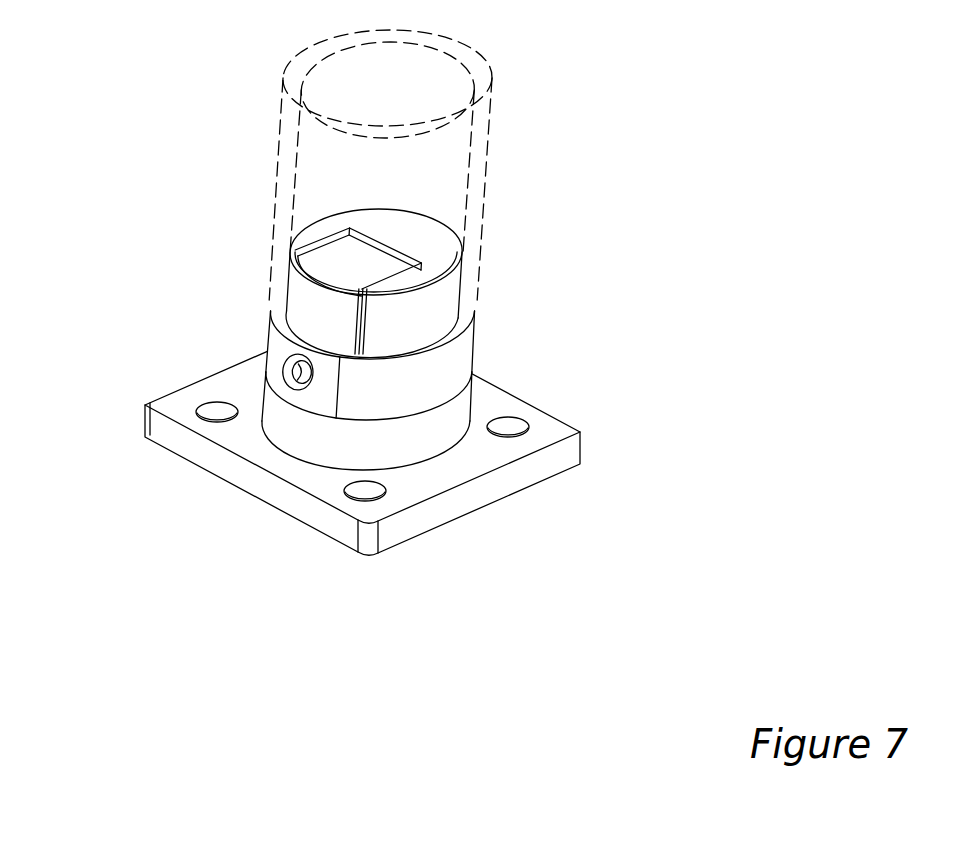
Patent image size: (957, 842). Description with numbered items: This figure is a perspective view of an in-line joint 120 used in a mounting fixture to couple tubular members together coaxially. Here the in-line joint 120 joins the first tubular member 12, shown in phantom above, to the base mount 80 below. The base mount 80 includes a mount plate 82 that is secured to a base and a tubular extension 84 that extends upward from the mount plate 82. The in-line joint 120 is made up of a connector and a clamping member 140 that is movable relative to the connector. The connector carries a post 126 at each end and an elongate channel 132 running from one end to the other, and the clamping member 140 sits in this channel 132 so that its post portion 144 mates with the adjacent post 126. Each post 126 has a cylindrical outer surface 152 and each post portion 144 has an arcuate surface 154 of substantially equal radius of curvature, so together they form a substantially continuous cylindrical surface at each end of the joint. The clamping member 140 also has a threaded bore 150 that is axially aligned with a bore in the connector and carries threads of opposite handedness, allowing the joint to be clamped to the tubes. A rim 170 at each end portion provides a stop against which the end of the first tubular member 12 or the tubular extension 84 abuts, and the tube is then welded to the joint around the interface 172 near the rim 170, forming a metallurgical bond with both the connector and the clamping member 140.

The first tubular member 12 is at (291, 128).
The base mount 80 is at (585, 409).
The mount plate 82 is at (478, 495).
The tubular extension 84 is at (295, 432).
The in-line joint 120 is at (585, 196).
The post 126 is at (440, 253).
The elongate channel 132 is at (382, 243).
The clamping member 140 is at (280, 350).
The post portion 144 is at (328, 262).
The threaded bore 150 is at (285, 380).
The cylindrical outer surface 152 is at (442, 305).
The arcuate surface 154 is at (303, 305).
The rim 170 is at (463, 325).
The interface 172 is at (440, 406).